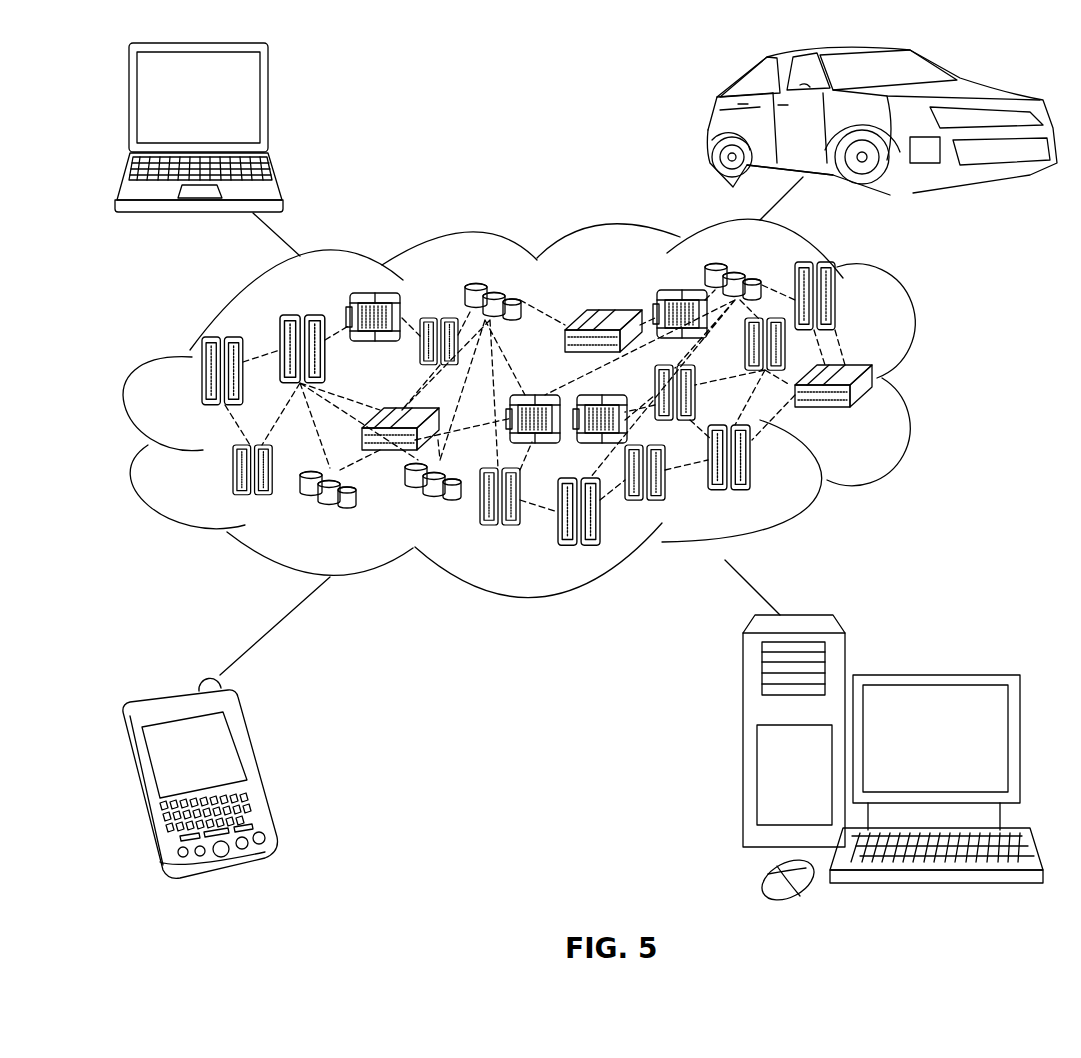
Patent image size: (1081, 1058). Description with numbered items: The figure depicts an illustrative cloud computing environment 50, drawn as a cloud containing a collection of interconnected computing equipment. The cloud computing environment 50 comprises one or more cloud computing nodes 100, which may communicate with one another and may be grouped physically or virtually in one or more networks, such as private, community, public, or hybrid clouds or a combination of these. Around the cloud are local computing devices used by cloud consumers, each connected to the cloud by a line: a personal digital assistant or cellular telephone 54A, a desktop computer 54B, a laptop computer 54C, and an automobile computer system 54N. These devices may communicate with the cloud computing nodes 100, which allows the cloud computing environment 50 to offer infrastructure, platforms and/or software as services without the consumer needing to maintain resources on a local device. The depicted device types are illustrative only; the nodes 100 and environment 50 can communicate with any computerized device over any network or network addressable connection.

The cloud computing environment 50 is at (933, 382).
The cloud computing nodes 100 is at (874, 412).
The personal digital assistant or cellular telephone 54A is at (257, 768).
The desktop computer 54B is at (932, 673).
The laptop computer 54C is at (270, 105).
The automobile computer system 54N is at (712, 122).